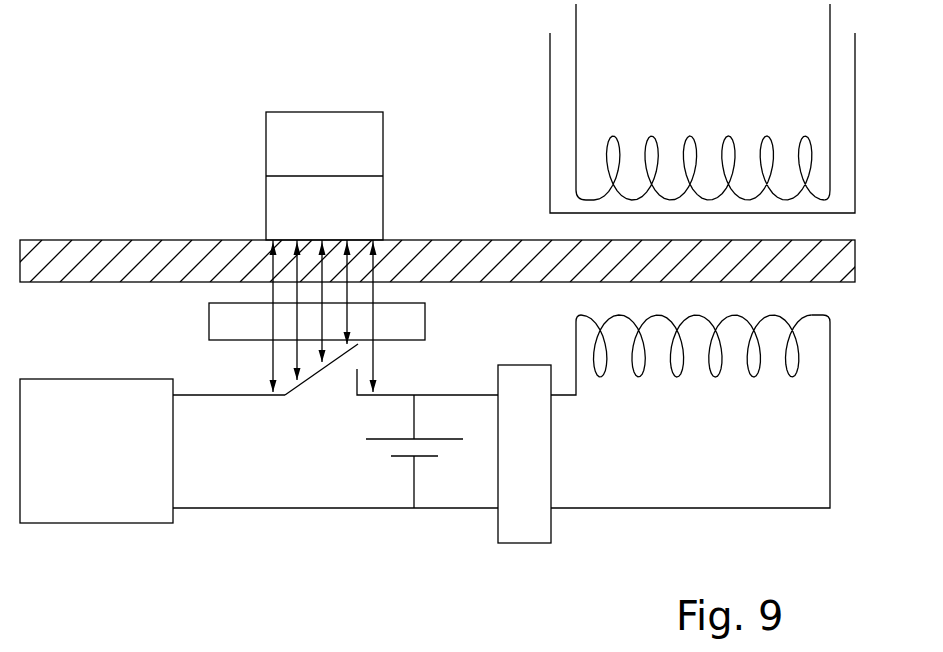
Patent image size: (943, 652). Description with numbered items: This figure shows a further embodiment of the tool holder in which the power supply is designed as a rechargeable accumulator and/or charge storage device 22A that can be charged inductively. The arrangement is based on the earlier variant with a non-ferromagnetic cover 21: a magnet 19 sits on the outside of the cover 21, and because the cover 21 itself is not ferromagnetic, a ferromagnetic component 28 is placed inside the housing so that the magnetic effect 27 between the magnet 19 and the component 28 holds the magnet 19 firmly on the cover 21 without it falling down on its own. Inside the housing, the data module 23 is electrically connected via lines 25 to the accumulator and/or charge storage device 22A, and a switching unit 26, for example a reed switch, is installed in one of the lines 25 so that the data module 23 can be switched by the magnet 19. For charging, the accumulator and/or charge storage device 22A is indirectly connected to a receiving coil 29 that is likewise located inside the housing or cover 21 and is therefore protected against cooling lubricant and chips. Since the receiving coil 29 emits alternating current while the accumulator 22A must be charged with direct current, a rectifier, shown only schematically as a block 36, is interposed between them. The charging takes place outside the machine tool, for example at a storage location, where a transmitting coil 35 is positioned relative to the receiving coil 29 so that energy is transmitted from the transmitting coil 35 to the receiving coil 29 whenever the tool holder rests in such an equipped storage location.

The magnet 19 is at (383, 127).
The cover 21 is at (131, 258).
The accumulator and/or charge storage device 22A is at (450, 455).
The data module 23 is at (125, 523).
The lines 25 is at (377, 397).
The switching unit 26 is at (290, 391).
The magnetic effect 27 is at (373, 258).
The ferromagnetic component 28 is at (425, 320).
The receiving coil 29 is at (752, 378).
The transmitting coil 35 is at (740, 137).
The rectifier block 36 is at (552, 468).